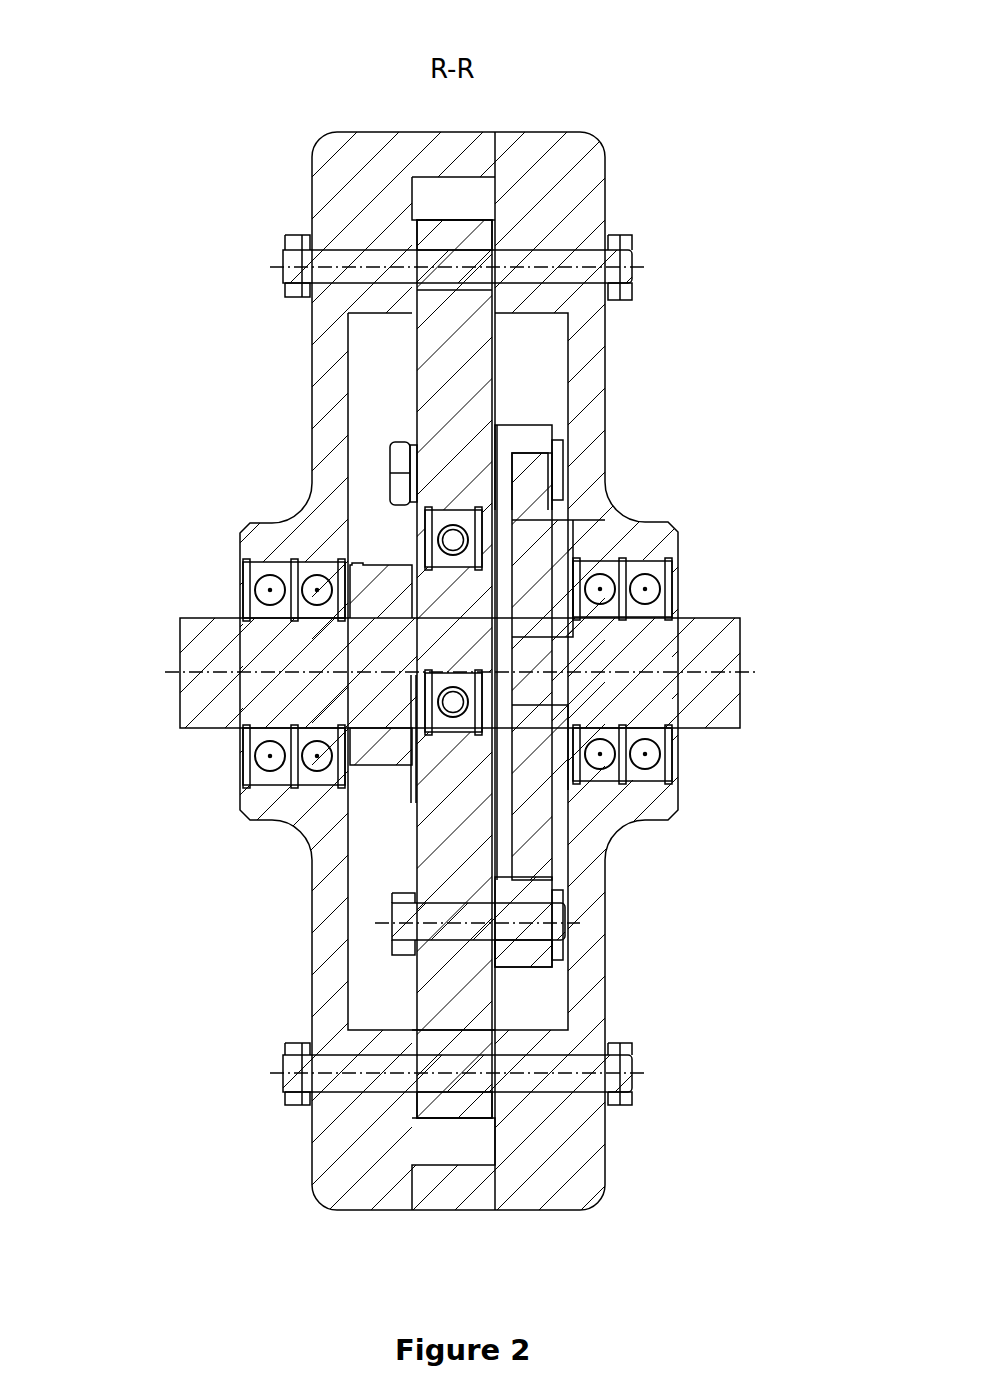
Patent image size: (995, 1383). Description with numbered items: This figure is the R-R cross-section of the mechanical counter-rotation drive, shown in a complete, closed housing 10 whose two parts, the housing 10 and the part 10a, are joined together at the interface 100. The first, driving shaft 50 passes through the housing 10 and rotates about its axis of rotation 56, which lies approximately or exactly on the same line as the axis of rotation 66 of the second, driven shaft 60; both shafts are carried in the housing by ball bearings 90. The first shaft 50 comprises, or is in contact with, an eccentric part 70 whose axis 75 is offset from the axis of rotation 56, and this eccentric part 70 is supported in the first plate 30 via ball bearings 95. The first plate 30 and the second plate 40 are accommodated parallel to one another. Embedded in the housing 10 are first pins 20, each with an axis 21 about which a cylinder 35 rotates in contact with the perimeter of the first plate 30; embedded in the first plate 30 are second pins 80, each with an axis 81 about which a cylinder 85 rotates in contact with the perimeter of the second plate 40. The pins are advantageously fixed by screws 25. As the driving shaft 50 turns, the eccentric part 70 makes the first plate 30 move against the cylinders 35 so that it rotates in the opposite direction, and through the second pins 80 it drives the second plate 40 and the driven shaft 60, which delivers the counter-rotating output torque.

The housing 10 is at (355, 190).
The part of the housing 10a is at (575, 178).
The first pins 20 is at (345, 258).
The axes of the first pins 21 is at (585, 268).
The screws 25 is at (385, 463).
The first plate 30 is at (450, 380).
The cylinder 35 is at (455, 230).
The second plate 40 is at (535, 533).
The first shaft 50 is at (235, 650).
The axis of rotation 56 is at (280, 677).
The second shaft 60 is at (715, 630).
The axis of rotation 66 is at (620, 672).
The eccentric part 70 is at (375, 588).
The axis of the eccentric part 75 is at (415, 620).
The second pins 80 is at (562, 910).
The axes of the second pins 81 is at (440, 925).
The cylinder 85 is at (530, 437).
The ball bearings 90 is at (262, 770).
The ball bearings 95 is at (448, 693).
The interface 100 is at (495, 1197).